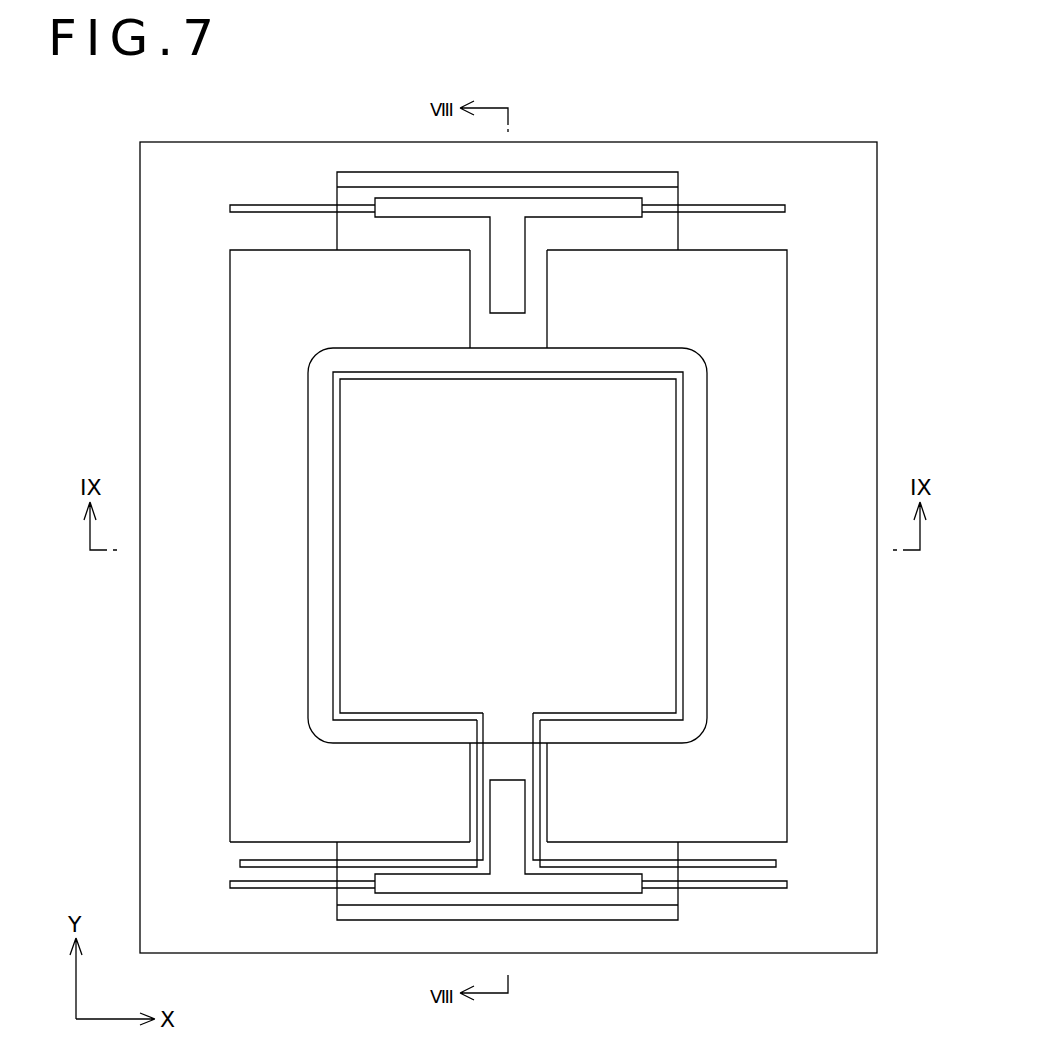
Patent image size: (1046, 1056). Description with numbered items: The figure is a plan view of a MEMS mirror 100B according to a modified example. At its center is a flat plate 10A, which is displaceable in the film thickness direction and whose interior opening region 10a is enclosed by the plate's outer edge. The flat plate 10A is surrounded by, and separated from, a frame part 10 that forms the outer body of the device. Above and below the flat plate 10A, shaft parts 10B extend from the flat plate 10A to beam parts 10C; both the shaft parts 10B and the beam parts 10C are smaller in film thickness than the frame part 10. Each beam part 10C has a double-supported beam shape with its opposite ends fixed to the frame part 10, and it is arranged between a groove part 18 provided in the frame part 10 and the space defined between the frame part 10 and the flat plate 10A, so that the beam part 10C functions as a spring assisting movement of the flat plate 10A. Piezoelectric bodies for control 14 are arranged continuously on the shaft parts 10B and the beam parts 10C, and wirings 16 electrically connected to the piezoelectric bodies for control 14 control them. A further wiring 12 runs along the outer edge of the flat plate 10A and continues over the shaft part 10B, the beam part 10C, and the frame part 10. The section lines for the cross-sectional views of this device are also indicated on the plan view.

The MEMS mirror 100B is at (120, 148).
The frame part 10 is at (857, 648).
The flat plate 10A is at (707, 393).
The opening 10a is at (612, 590).
The shaft part 10B is at (547, 300).
The beam part 10C is at (337, 182).
The wiring 12 is at (683, 683).
The piezoelectric body for control 14 is at (567, 208).
The wiring 16 is at (747, 205).
The groove part 18 is at (378, 180).